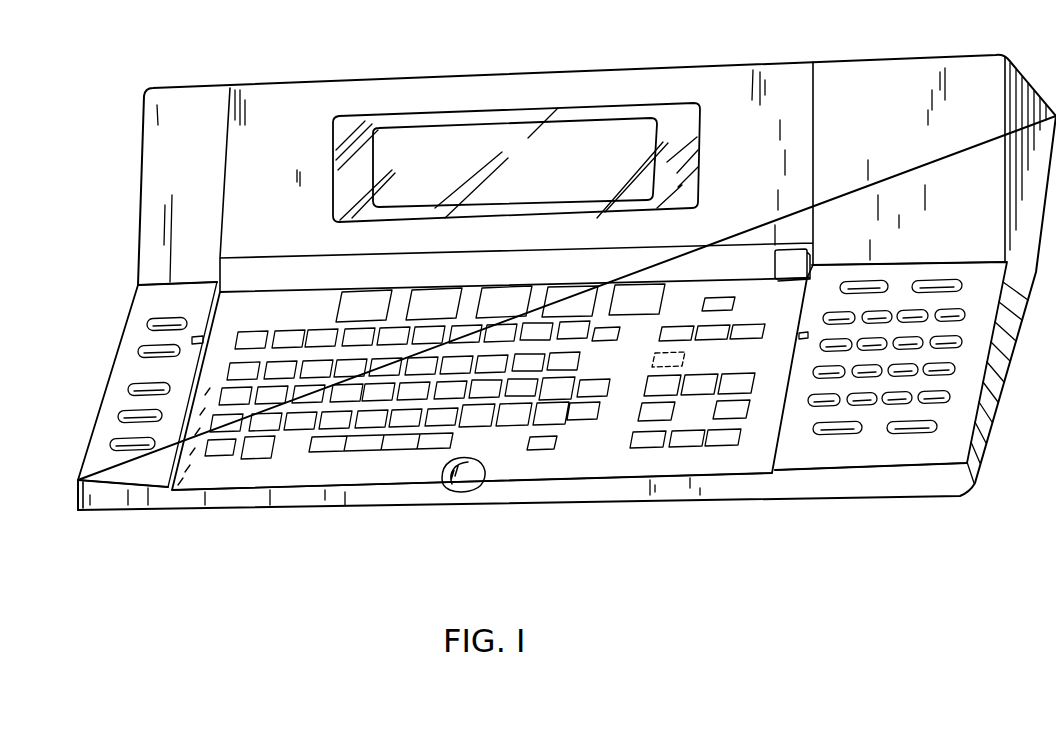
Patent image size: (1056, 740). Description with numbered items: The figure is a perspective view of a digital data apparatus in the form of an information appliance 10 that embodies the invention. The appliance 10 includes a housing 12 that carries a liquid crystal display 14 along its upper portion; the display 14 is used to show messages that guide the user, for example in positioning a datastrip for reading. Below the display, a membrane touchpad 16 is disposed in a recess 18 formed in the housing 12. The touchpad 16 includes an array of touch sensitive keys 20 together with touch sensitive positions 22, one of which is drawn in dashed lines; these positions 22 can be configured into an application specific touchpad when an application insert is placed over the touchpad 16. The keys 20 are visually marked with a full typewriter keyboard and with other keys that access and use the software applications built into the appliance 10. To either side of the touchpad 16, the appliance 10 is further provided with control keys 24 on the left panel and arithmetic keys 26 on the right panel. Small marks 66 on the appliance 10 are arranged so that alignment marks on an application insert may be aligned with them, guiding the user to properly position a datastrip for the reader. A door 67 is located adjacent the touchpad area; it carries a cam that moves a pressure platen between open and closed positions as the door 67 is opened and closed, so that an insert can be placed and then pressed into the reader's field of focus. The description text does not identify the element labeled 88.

The information appliance 10 is at (523, 67).
The housing 12 is at (640, 70).
The liquid crystal display 14 is at (422, 133).
The membrane touchpad 16 is at (293, 446).
The recess 18 is at (597, 455).
The touch sensitive keys 20 is at (255, 335).
The touch sensitive positions 22 is at (692, 360).
The control keys 24 is at (137, 417).
The arithmetic keys 26 is at (953, 372).
The marks 66 is at (197, 336).
The door 67 is at (735, 260).
The key 88 is at (128, 389).